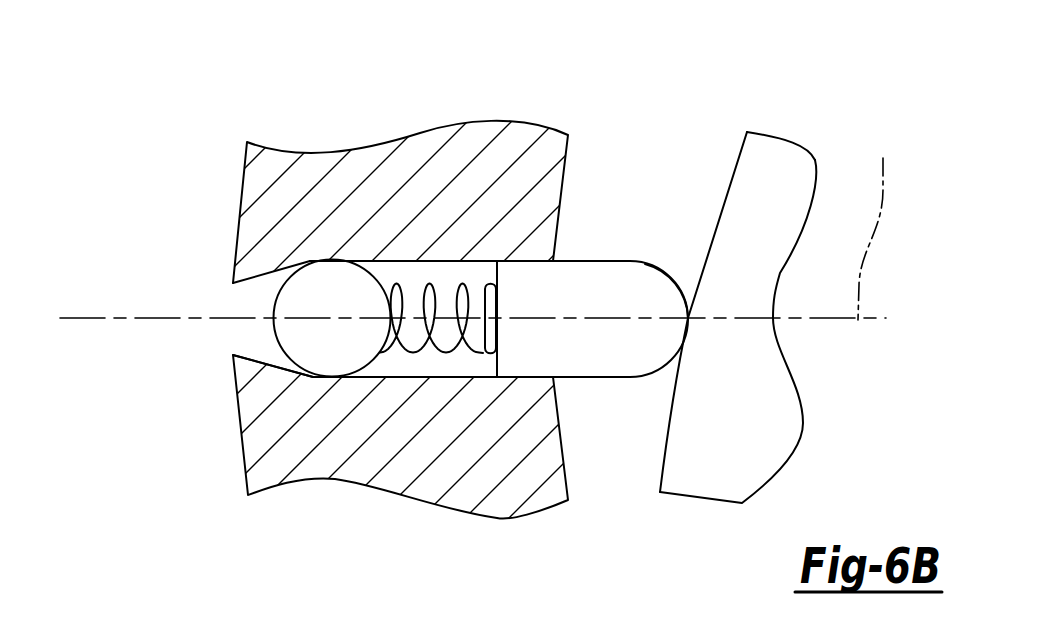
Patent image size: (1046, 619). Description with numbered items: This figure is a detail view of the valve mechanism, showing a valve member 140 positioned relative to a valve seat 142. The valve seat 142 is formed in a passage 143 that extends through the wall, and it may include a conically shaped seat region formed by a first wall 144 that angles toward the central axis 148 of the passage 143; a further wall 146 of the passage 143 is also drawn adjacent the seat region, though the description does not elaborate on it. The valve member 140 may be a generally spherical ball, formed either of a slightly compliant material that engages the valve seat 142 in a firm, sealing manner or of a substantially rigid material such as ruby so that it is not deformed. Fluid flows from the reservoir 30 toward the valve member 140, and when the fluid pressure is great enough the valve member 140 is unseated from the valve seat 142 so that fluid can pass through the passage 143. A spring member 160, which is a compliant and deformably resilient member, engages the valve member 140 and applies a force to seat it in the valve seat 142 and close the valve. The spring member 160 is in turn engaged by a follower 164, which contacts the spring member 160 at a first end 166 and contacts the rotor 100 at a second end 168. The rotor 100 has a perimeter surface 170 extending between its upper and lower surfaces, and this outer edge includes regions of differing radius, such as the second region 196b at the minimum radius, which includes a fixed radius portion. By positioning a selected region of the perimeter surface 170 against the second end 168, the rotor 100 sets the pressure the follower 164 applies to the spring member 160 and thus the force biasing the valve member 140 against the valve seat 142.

The reservoir 30 is at (402, 315).
The rotor 100 is at (754, 307).
The valve member 140 is at (337, 347).
The valve seat 142 is at (272, 370).
The passage 143 is at (274, 288).
The first wall 144 is at (240, 355).
The upper chamfer surface 146 is at (240, 285).
The central axis 148 is at (879, 222).
The spring member 160 is at (427, 347).
The follower 164 is at (592, 259).
The first end 166 is at (498, 272).
The second end 168 is at (684, 310).
The perimeter surface 170 is at (744, 147).
The second region 196b is at (668, 421).